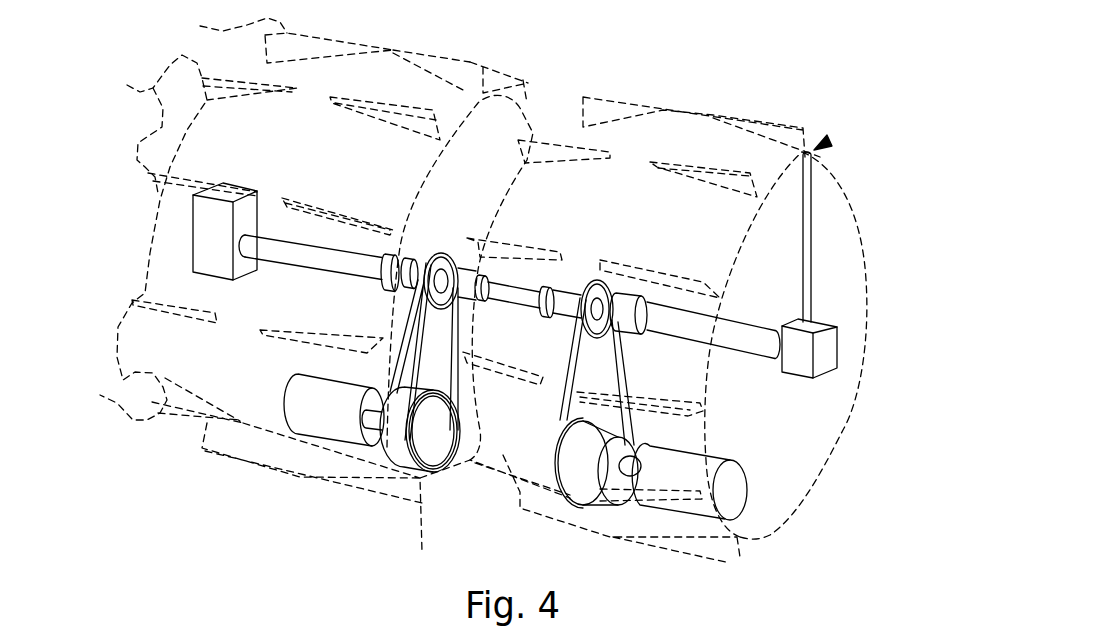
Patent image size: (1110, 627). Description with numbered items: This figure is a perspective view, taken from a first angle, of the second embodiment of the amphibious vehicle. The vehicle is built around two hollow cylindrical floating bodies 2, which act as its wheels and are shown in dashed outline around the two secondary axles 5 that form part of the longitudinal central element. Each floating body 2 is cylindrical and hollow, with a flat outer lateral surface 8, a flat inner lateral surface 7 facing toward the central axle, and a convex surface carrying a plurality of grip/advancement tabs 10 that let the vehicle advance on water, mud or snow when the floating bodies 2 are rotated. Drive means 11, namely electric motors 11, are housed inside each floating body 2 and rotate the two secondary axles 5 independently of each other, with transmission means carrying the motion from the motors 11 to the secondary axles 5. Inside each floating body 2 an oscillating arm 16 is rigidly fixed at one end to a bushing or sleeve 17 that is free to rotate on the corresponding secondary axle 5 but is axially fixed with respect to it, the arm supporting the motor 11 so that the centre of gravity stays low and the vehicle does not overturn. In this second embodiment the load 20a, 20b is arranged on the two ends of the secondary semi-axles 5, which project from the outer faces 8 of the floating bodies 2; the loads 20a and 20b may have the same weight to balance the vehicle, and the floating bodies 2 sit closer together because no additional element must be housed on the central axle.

The floating body 2 is at (820, 148).
The secondary axle 5 is at (743, 335).
The inner lateral surface 7 is at (468, 128).
The outer lateral surface 8 is at (825, 267).
The grip/advancement tabs 10 is at (93, 398).
The drive means 11 is at (393, 467).
The oscillating arm 16 is at (630, 377).
The bushing (sleeve) 17 is at (626, 294).
The load 20a is at (210, 232).
The load 20b is at (825, 347).